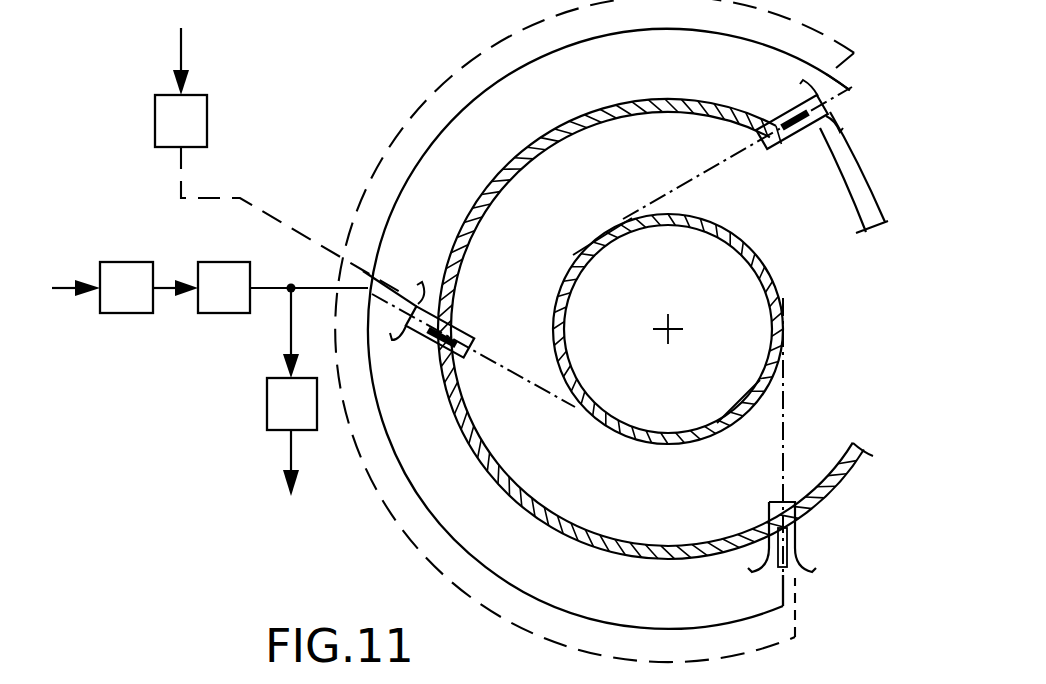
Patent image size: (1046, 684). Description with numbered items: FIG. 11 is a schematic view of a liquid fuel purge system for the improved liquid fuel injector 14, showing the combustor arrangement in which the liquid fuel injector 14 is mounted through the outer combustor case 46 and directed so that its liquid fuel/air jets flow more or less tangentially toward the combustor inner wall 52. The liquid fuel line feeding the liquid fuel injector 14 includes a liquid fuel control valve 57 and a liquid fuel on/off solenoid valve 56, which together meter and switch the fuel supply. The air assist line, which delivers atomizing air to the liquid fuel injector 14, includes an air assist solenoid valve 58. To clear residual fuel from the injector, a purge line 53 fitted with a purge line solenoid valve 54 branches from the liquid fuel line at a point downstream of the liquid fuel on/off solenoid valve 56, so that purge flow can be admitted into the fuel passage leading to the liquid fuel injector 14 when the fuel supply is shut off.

The liquid fuel injector 14 is at (830, 539).
The outer combustor case 46 is at (840, 170).
The combustor inner wall 52 is at (757, 258).
The purge line 53 is at (290, 321).
The purge line solenoid valve 54 is at (276, 419).
The liquid fuel on/off solenoid valve 56 is at (260, 287).
The liquid fuel control valve 57 is at (143, 303).
The air assist solenoid valve 58 is at (277, 160).